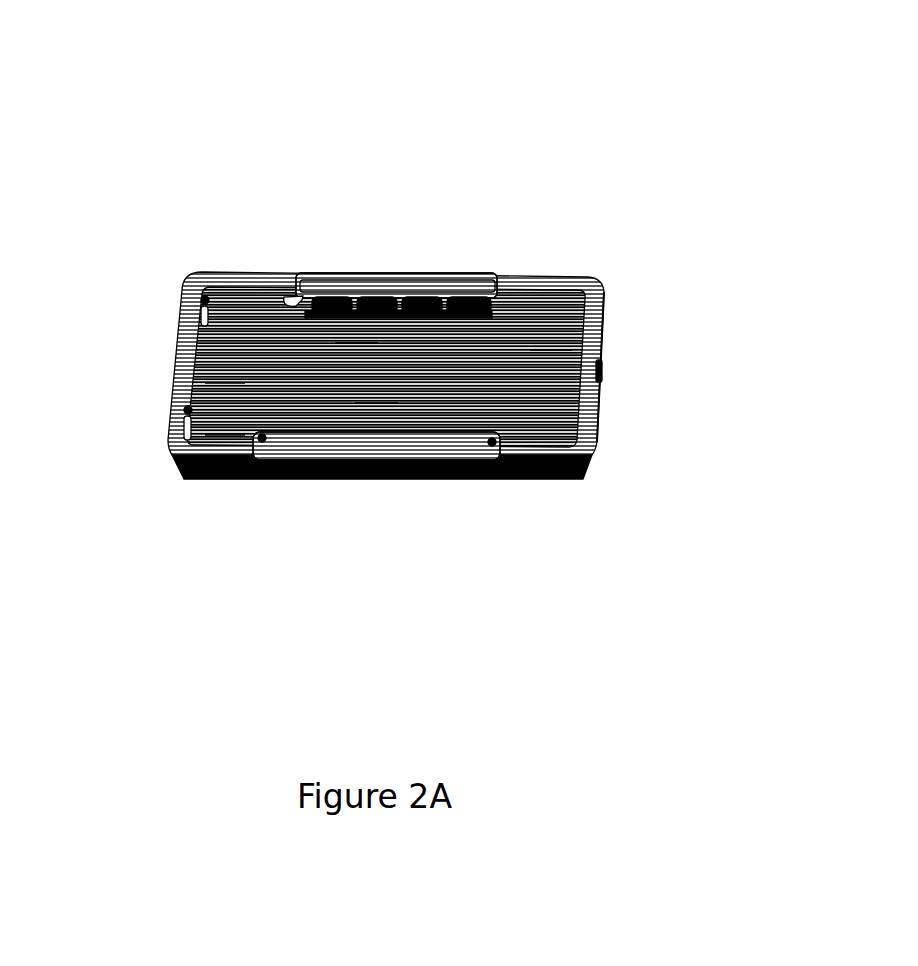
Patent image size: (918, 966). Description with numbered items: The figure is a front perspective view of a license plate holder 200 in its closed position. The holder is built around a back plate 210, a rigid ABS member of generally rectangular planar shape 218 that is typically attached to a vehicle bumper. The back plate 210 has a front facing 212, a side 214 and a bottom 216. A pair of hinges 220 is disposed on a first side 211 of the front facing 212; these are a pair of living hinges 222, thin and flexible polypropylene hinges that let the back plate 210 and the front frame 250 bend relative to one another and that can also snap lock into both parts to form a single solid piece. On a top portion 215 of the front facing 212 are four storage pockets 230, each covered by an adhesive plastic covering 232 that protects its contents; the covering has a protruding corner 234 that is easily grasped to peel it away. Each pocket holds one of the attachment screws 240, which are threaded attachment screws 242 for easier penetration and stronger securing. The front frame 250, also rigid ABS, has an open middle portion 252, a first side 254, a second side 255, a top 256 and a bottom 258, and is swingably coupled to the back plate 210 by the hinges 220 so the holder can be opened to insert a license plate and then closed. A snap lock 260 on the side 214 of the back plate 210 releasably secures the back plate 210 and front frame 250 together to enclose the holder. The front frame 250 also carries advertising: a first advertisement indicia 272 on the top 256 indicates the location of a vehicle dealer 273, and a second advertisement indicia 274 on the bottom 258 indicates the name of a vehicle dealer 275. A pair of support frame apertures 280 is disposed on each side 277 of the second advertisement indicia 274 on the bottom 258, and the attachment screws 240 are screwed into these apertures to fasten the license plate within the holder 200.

The license plate holder 200 is at (416, 291).
The back plate 210 is at (335, 294).
The generally rectangular planar shape 218 is at (240, 300).
The first side 211 is at (230, 370).
The front facing 212 is at (380, 392).
The side 214 is at (555, 340).
The top portion 215 is at (360, 332).
The bottom 216 is at (230, 424).
The pair of hinges 220 is at (142, 350).
The pair of living hinges 222 is at (188, 408).
The storage pockets 230 is at (537, 375).
The adhesive plastic covering 232 is at (356, 303).
The protruding corner 234 is at (303, 298).
The attachment screws 240 is at (586, 393).
The threaded attachment screws 242 is at (472, 322).
The front frame 250 is at (416, 358).
The open middle portion 252 is at (549, 393).
The first side 254 is at (170, 418).
The second side 255 is at (602, 342).
The top 256 is at (420, 272).
The bottom 258 is at (466, 483).
The snap lock 260 is at (598, 370).
The first advertisement indicia 272 is at (515, 222).
The location of a vehicle dealer 273 is at (452, 285).
The second advertisement indicia 274 is at (487, 504).
The name of a vehicle dealer 275 is at (492, 444).
The each side 277 is at (262, 438).
The pair of support frame apertures 280 is at (377, 480).